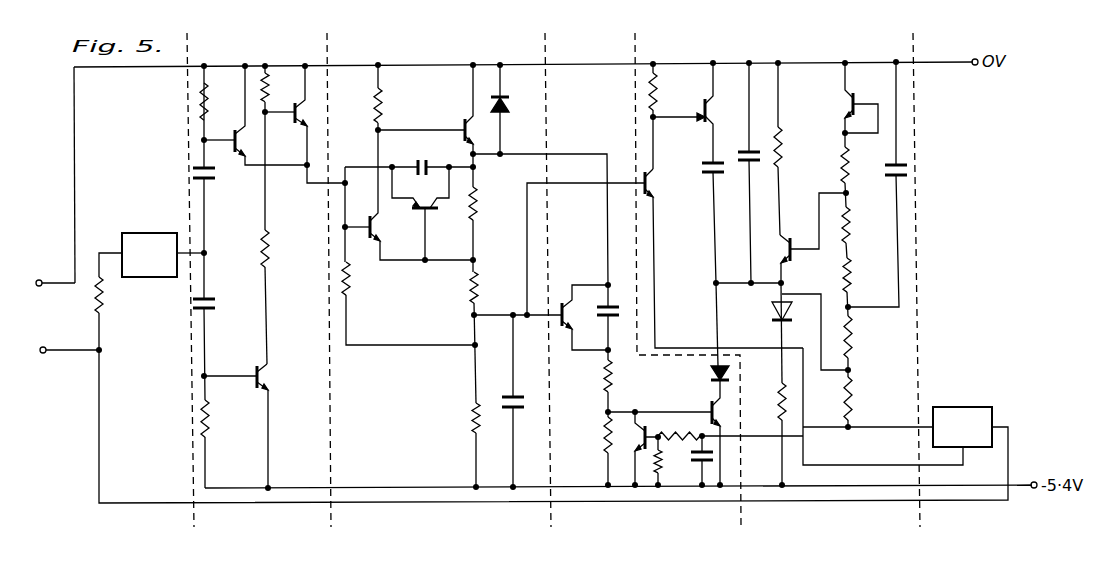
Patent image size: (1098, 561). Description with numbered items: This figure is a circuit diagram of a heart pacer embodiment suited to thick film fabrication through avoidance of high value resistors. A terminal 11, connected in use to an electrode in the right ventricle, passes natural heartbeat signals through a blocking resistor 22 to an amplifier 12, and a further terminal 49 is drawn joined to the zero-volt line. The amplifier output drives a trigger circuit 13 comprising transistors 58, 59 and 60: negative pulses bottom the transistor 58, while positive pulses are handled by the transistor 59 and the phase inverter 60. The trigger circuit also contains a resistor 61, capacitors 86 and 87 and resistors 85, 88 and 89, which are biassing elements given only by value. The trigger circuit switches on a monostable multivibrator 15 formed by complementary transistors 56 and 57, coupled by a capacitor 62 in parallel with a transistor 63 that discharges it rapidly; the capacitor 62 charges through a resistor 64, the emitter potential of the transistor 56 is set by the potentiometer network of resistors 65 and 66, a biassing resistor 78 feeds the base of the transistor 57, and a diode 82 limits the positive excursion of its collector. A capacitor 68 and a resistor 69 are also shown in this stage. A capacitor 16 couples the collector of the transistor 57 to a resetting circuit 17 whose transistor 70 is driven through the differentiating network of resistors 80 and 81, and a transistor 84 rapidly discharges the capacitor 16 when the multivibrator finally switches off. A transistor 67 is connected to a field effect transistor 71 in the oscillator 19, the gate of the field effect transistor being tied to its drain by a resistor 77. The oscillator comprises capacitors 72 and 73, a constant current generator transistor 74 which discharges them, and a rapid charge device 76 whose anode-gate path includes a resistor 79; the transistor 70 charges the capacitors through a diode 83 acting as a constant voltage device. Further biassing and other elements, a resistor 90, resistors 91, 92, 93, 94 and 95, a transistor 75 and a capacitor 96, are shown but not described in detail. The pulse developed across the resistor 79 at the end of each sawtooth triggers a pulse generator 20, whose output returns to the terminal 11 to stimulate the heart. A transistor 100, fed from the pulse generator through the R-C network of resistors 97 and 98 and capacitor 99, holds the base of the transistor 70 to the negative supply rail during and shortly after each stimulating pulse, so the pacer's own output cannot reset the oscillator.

The terminal 11 is at (61, 352).
The amplifier 12 is at (168, 226).
The trigger circuit 13 is at (259, 280).
The monostable multivibrator 15 is at (452, 280).
The capacitor 16 is at (615, 322).
The resetting circuit 17 is at (649, 278).
The oscillator 19 is at (807, 280).
The pulse generator 20 is at (969, 407).
The blocking resistor 22 is at (137, 286).
The input terminal 49 is at (44, 286).
The transistor 56 is at (410, 196).
The transistor 57 is at (436, 124).
The transistor 58 is at (257, 115).
The transistor 59 is at (247, 427).
The phase inverter 60 is at (306, 124).
The resistor 61 is at (275, 146).
The capacitor 62 is at (431, 158).
The transistor 63 is at (420, 213).
The resistor 64 is at (410, 305).
The resistor 65 is at (486, 229).
The resistor 66 is at (486, 337).
The transistor 67 is at (724, 258).
The capacitor 68 is at (520, 401).
The resistor 69 is at (463, 446).
The transistor 70 is at (704, 434).
The field effect transistor 71 is at (692, 111).
The capacitive element 72 is at (712, 159).
The capacitive element 73 is at (748, 152).
The constant current generator 74 is at (804, 238).
The transistor 75 is at (852, 98).
The rapid charge device 76 is at (775, 311).
The resistor 77 is at (666, 115).
The biassing resistor 78 is at (388, 97).
The resistor 79 is at (769, 435).
The resistor 80 is at (619, 388).
The resistor 81 is at (596, 452).
The diode 82 is at (509, 109).
The diode 83 is at (713, 376).
The transistor 84 is at (586, 317).
The resistor 85 is at (216, 101).
The capacitor 86 is at (216, 177).
The capacitor 87 is at (218, 304).
The resistor 88 is at (218, 418).
The resistor 89 is at (278, 297).
The resistor 90 is at (792, 147).
The resistor 91 is at (859, 170).
The resistor 92 is at (859, 232).
The resistor 93 is at (860, 287).
The resistor 94 is at (861, 346).
The resistor 95 is at (861, 403).
The capacitor 96 is at (877, 183).
The resistor 97 is at (689, 460).
The resistor 98 is at (681, 426).
The capacitor 99 is at (694, 462).
The transistor 100 is at (640, 436).